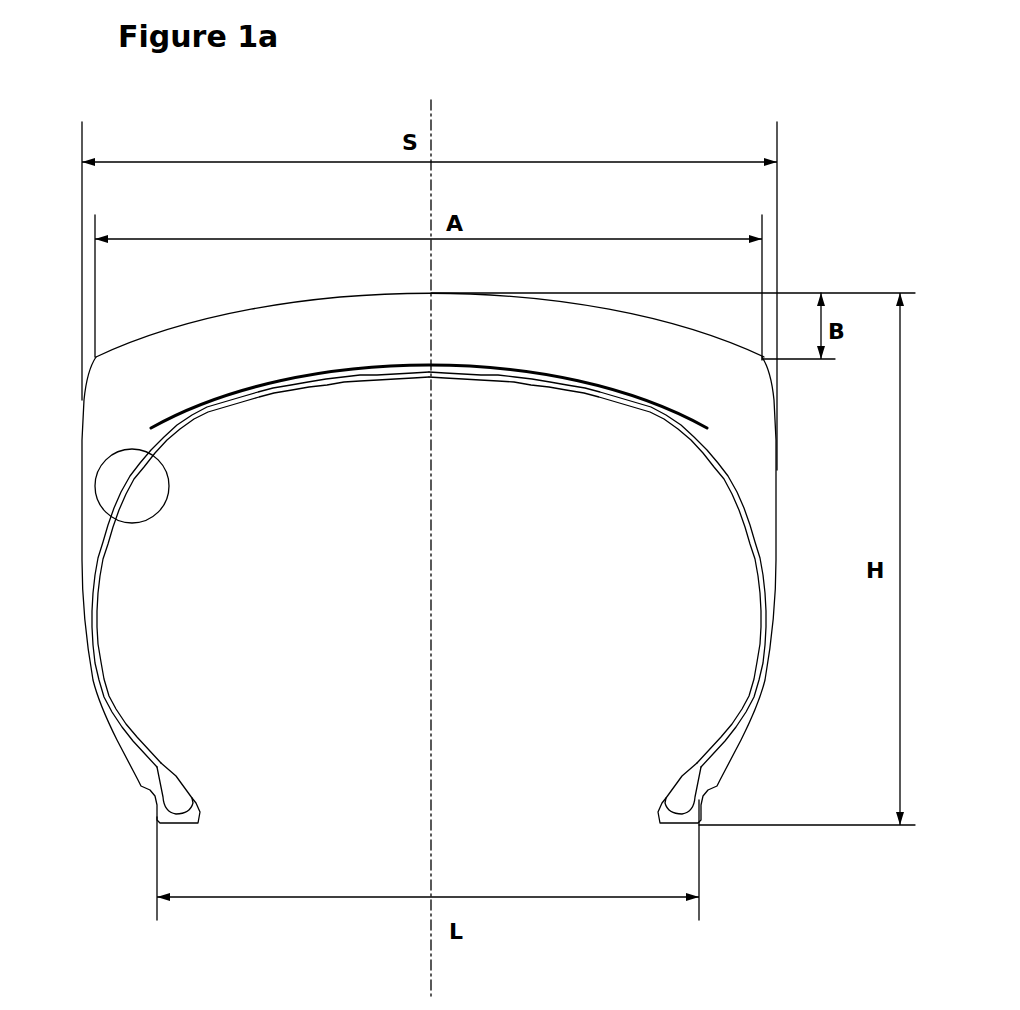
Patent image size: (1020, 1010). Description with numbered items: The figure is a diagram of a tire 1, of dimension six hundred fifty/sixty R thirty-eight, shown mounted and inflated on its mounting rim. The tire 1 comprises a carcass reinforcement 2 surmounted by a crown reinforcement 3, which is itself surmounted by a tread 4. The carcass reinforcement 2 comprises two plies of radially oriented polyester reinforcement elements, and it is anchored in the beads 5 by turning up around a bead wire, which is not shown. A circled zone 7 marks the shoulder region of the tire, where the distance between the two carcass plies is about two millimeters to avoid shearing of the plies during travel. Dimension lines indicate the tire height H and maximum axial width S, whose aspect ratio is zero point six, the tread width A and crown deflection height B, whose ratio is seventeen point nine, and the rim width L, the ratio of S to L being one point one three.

The tire 1 is at (65, 611).
The carcass reinforcement 2 is at (116, 713).
The crown reinforcement 3 is at (702, 427).
The tread 4 is at (232, 314).
The beads 5 is at (195, 810).
The zone 7 is at (101, 470).